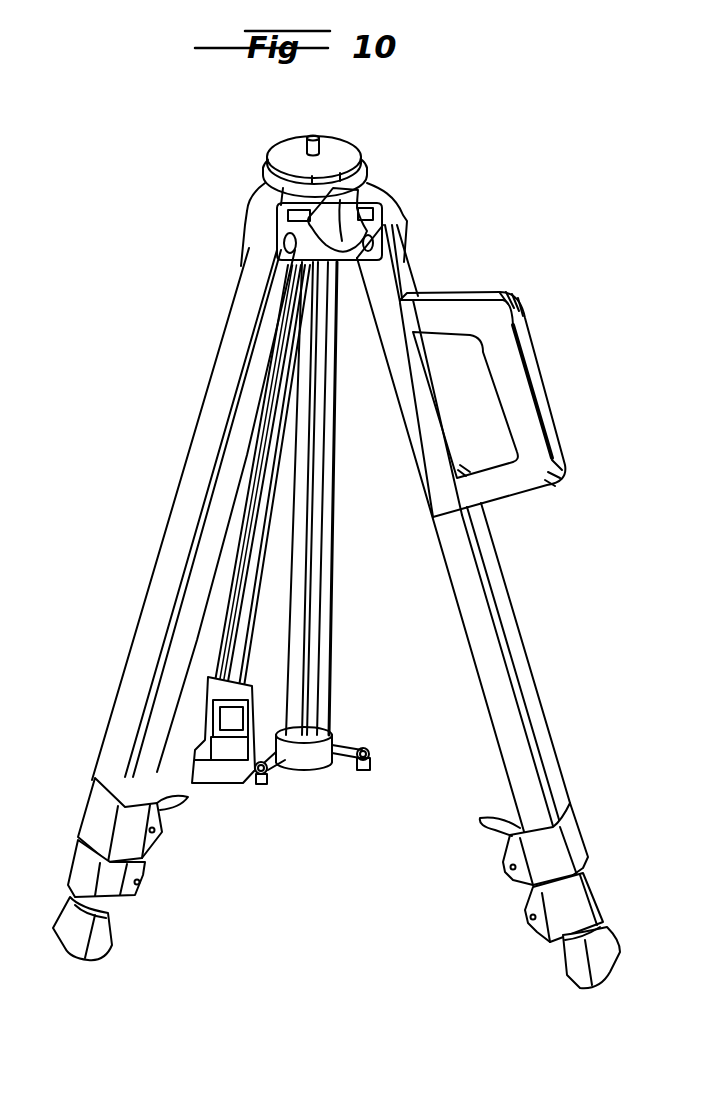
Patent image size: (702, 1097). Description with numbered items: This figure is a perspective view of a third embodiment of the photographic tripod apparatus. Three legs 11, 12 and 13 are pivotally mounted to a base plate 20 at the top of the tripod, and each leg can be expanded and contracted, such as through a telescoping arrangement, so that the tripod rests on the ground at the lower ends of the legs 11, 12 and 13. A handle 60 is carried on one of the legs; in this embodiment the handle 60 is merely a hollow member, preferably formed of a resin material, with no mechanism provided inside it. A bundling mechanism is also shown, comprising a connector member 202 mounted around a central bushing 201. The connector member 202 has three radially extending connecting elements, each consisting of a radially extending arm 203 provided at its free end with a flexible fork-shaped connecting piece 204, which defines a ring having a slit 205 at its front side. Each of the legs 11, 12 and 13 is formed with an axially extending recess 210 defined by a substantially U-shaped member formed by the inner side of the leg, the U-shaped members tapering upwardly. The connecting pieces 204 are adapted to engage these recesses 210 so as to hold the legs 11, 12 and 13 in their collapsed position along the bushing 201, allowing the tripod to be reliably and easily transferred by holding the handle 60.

The leg 11 is at (235, 570).
The leg 12 is at (493, 572).
The leg 13 is at (165, 587).
The base plate 20 is at (373, 181).
The handle 60 is at (543, 363).
The bushing 201 is at (328, 503).
The connector member 202 is at (334, 733).
The radially extending arm 203 is at (342, 748).
The fork-shaped connecting piece 204 is at (372, 752).
The slit 205 is at (370, 762).
The axially extending recess 210 is at (240, 637).